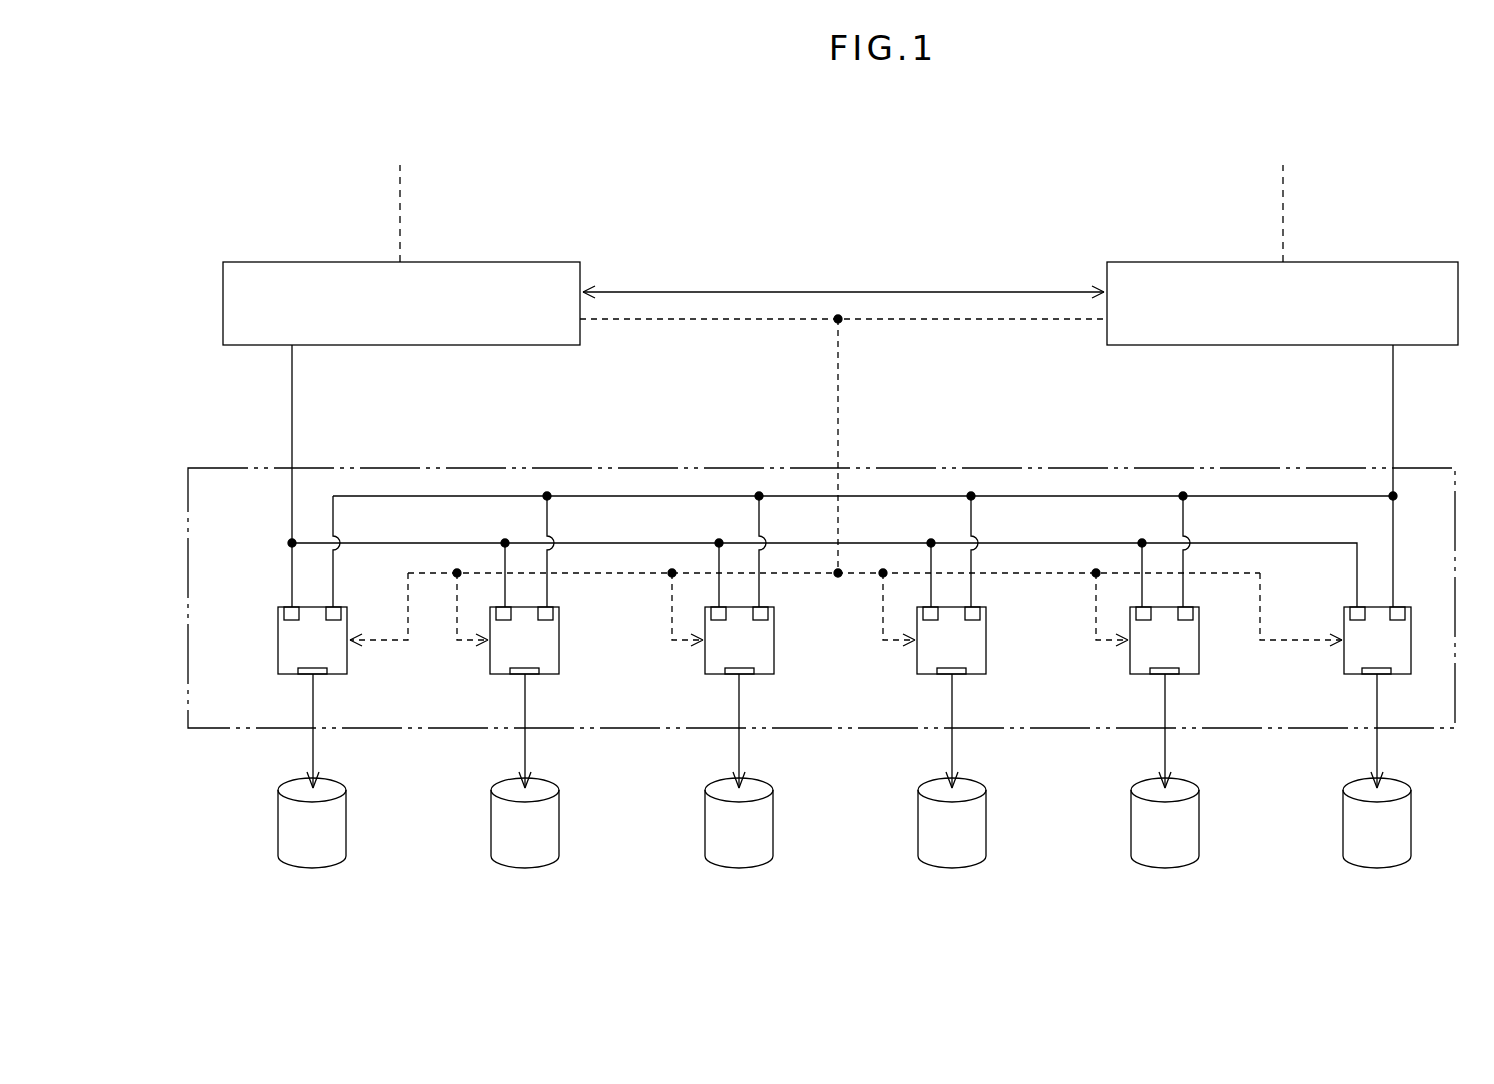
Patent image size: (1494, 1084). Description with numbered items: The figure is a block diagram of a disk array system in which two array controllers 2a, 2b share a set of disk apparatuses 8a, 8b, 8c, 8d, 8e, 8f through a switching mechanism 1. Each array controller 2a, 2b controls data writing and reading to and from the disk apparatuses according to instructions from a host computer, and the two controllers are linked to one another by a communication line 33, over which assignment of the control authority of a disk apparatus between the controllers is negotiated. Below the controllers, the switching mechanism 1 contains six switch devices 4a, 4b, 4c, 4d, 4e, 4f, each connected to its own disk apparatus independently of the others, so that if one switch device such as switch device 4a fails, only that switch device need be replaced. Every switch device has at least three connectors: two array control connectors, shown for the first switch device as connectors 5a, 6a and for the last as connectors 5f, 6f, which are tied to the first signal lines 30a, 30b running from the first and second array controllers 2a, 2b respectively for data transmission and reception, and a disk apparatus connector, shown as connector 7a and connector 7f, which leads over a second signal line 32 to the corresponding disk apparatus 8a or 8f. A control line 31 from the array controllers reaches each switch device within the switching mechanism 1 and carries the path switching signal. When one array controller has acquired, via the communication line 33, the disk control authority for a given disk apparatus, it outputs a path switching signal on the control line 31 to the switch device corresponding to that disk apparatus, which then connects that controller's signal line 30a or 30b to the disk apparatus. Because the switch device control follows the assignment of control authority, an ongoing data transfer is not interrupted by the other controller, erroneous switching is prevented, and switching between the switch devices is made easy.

The switching mechanism 1 is at (1128, 468).
The array controller 2a is at (516, 262).
The array controller 2b is at (1405, 262).
The communication line 33 is at (907, 292).
The control line 31 is at (838, 408).
The first signal line 30a is at (292, 407).
The first signal line 30b is at (1393, 407).
The switch device 4a is at (302, 655).
The switch device 4b is at (490, 662).
The switch device 4c is at (705, 662).
The switch device 4d is at (917, 662).
The switch device 4e is at (1130, 662).
The switch device 4f is at (1359, 638).
The array control connector 5a is at (283, 614).
The array control connector 6a is at (342, 614).
The disk apparatus connector 7a is at (295, 674).
The array control connector 5f is at (1352, 614).
The array control connector 6f is at (1400, 607).
The disk apparatus connector 7f is at (1362, 674).
The second signal line 32 is at (313, 756).
The disk apparatus 8a is at (292, 826).
The disk apparatus 8b is at (505, 826).
The disk apparatus 8c is at (719, 826).
The disk apparatus 8d is at (932, 826).
The disk apparatus 8e is at (1145, 826).
The disk apparatus 8f is at (1357, 826).